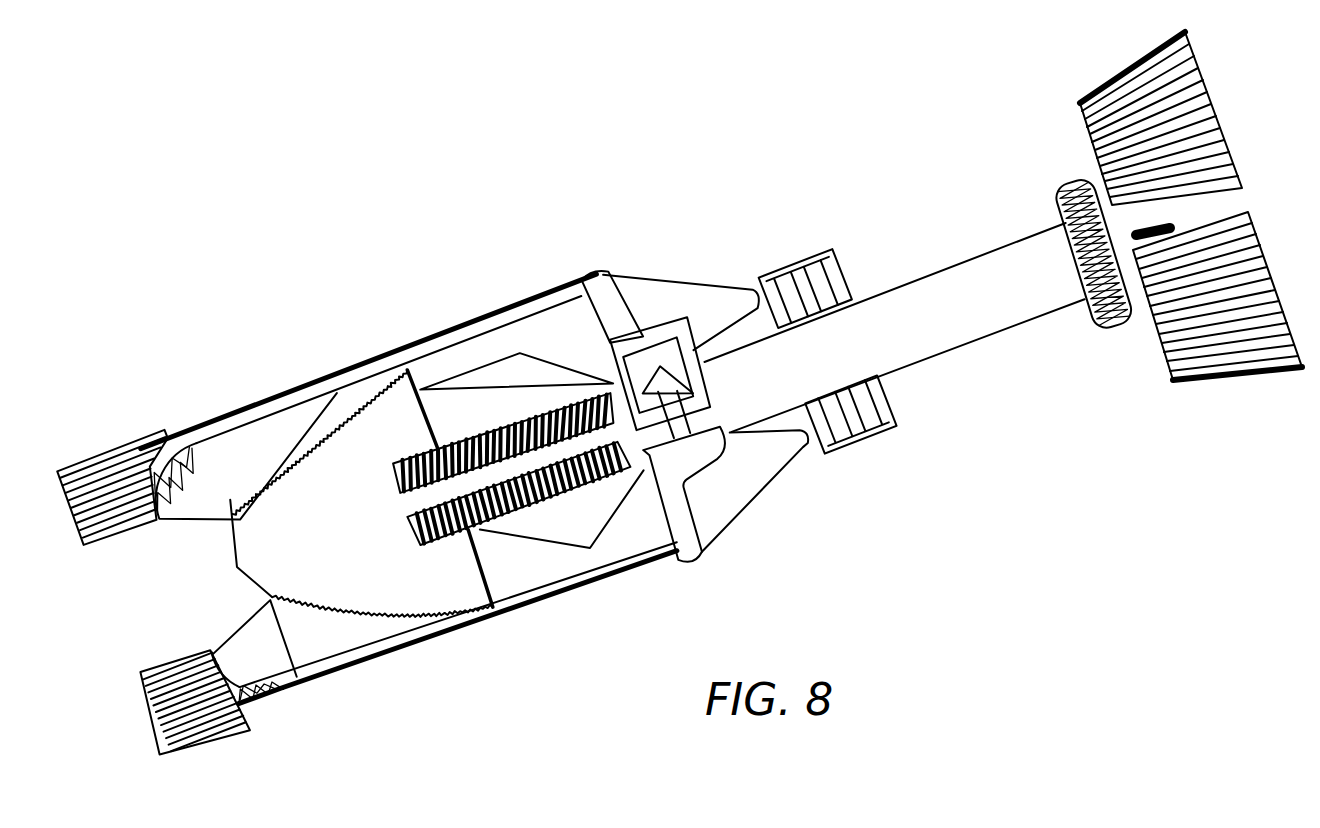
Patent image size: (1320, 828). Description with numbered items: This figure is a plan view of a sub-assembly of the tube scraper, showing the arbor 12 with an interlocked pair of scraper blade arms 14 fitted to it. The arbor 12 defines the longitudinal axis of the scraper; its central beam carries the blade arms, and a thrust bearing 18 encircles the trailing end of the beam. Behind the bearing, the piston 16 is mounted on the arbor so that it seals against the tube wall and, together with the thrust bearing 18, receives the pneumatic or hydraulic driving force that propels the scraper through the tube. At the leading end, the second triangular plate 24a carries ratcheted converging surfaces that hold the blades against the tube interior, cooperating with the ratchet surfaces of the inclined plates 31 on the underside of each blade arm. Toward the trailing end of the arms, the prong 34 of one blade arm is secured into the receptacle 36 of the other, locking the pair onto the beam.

The arbor 12 is at (966, 262).
The scraper blade arms 14 is at (289, 343).
The piston 16 is at (1093, 98).
The thrust bearing 18 is at (1066, 181).
The second triangular plate 24a is at (346, 529).
The inclined plates 31 is at (262, 472).
The prong 34 is at (666, 364).
The receptacle 36 is at (662, 338).